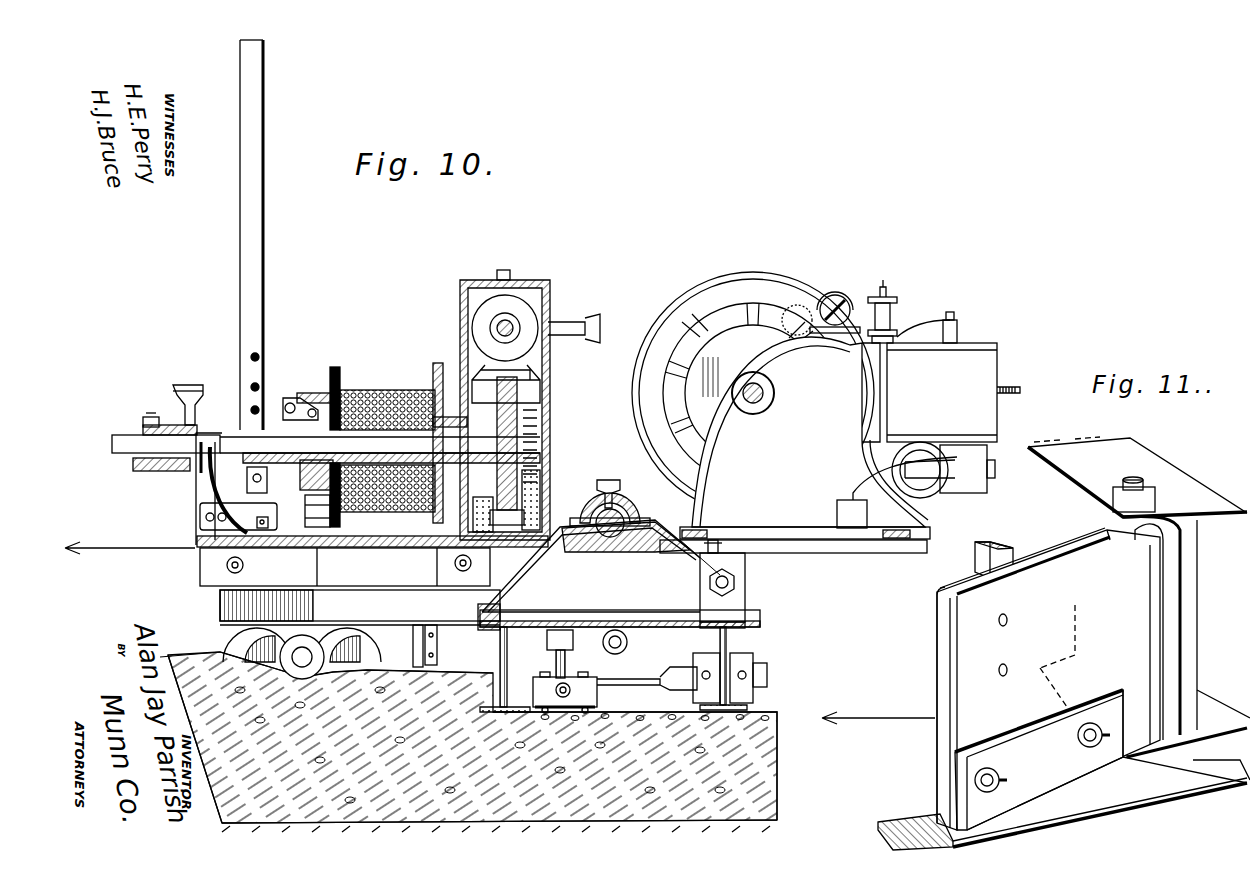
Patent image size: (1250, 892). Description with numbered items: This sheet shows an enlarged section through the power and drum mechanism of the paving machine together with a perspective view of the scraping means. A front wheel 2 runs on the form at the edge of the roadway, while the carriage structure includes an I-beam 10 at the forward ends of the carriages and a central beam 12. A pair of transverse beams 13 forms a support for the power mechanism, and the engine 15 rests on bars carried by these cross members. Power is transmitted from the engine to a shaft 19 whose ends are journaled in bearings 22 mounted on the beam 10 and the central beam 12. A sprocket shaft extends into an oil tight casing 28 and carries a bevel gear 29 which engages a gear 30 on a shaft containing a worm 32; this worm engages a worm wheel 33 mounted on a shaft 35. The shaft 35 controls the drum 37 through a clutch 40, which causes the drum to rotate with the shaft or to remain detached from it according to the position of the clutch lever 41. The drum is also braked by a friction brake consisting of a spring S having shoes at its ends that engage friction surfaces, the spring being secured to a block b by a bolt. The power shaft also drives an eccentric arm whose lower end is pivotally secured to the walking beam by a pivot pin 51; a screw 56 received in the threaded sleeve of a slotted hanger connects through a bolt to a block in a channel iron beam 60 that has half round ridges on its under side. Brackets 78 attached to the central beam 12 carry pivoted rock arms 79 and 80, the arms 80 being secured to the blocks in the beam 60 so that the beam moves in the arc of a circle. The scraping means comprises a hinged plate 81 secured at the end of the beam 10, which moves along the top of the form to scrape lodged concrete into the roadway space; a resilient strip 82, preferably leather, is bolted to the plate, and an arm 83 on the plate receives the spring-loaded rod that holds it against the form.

In FIG. 10, the front wheels 2 is at (212, 643).
In FIG. 10, the I-beam 10 is at (508, 662).
In FIG. 11, the I-beam 10 is at (1190, 484).
In FIG. 10, the central beam 12 is at (742, 647).
In FIG. 10, the transverse beams 13 is at (290, 590).
In FIG. 10, the engine 15 is at (915, 361).
In FIG. 10, the shaft 19 is at (620, 508).
In FIG. 10, the bearings 22 is at (619, 575).
In FIG. 10, the oil tight casing 28 is at (525, 282).
In FIG. 10, the bevel gear 29 is at (478, 318).
In FIG. 10, the gear 30 is at (463, 360).
In FIG. 10, the worm 32 is at (540, 420).
In FIG. 10, the worm wheel 33 is at (520, 392).
In FIG. 10, the shaft 35 is at (124, 462).
In FIG. 10, the drum 37 is at (343, 392).
In FIG. 10, the clutch 40 is at (287, 398).
In FIG. 10, the clutch lever 41 is at (265, 300).
In FIG. 10, the pivot pin 51 is at (628, 642).
In FIG. 10, the screw 56 is at (565, 650).
In FIG. 10, the channel iron beam 60 is at (600, 690).
In FIG. 10, the brackets 78 is at (755, 678).
In FIG. 10, the rock arms 79 is at (768, 670).
In FIG. 10, the rock arms 80 is at (650, 677).
In FIG. 10, the hinged plate 81 is at (480, 647).
In FIG. 11, the hinged plate 81 is at (1150, 628).
In FIG. 11, the resilient strip 82 is at (957, 752).
In FIG. 10, the arm 83 is at (414, 633).
In FIG. 11, the arm 83 is at (1008, 547).
In FIG. 10, the spring S is at (272, 520).
In FIG. 10, the block b is at (335, 550).